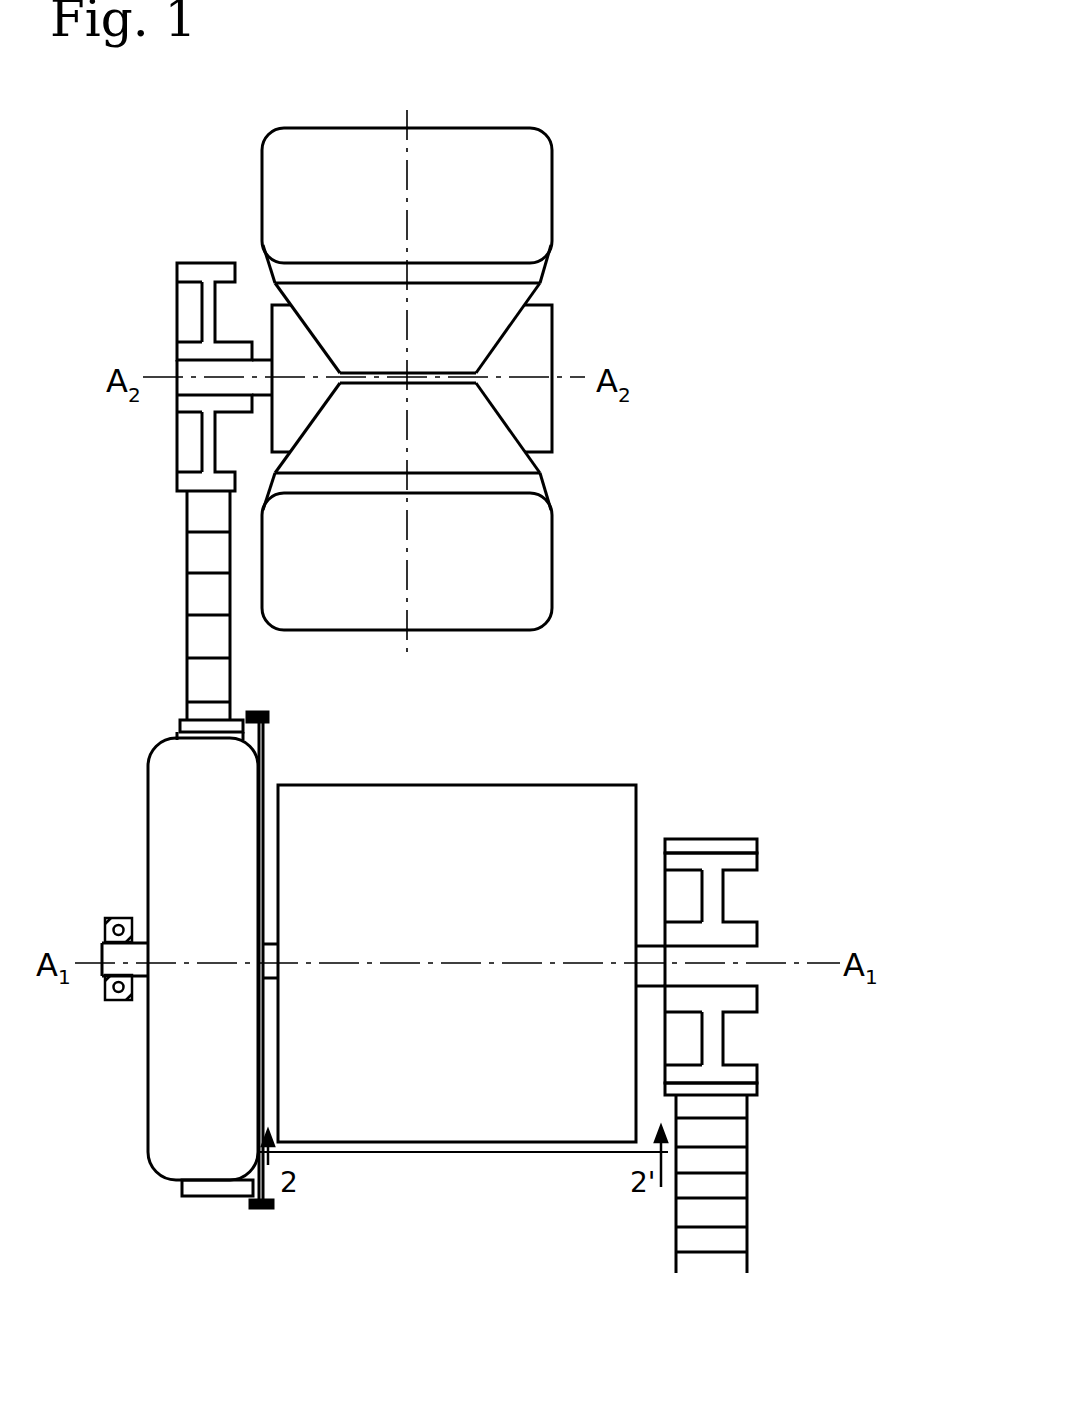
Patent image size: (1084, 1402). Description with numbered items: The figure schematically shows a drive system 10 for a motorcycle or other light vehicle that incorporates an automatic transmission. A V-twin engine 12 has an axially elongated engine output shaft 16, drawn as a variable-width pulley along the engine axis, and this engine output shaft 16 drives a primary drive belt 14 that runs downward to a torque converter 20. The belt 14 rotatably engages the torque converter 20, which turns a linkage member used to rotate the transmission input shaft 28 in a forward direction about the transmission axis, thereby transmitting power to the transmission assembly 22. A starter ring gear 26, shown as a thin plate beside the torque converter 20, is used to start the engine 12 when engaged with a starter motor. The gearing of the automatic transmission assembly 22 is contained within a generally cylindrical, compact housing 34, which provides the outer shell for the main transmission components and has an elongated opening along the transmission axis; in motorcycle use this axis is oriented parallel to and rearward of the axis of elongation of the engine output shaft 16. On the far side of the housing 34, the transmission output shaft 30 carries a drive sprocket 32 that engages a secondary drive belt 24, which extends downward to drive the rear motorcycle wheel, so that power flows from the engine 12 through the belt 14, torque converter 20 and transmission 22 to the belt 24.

The drive system 10 is at (694, 182).
The V-twin engine 12 is at (476, 228).
The primary drive belt 14 is at (197, 675).
The engine output shaft 16 is at (182, 368).
The torque converter 20 is at (146, 1134).
The transmission assembly 22 is at (430, 783).
The secondary drive belt 24 is at (750, 1142).
The starter ring gear 26 is at (273, 1212).
The transmission input shaft 28 is at (102, 938).
The transmission output shaft 30 is at (725, 978).
The drive sprocket 32 is at (707, 840).
The housing 34 is at (440, 1057).